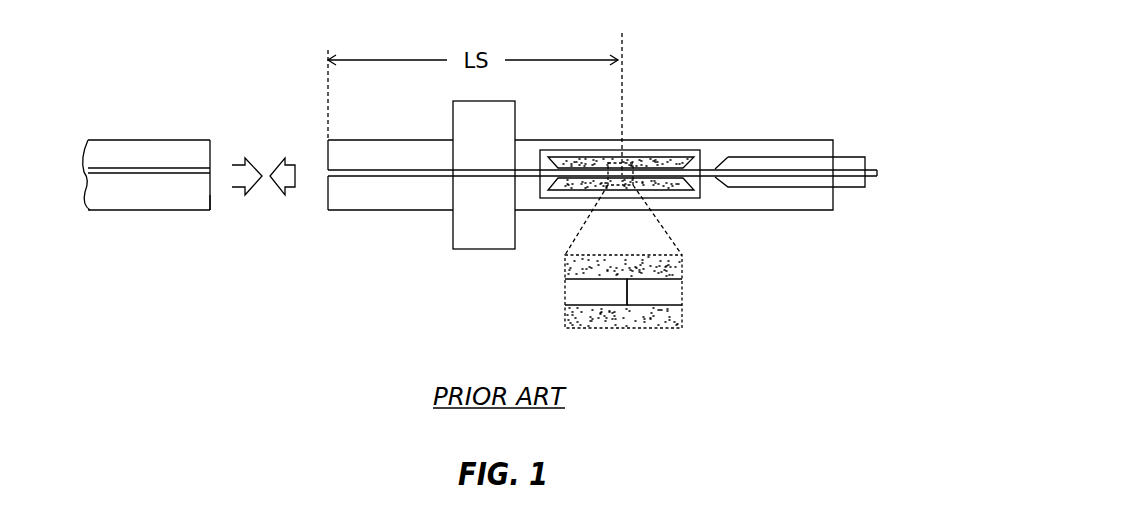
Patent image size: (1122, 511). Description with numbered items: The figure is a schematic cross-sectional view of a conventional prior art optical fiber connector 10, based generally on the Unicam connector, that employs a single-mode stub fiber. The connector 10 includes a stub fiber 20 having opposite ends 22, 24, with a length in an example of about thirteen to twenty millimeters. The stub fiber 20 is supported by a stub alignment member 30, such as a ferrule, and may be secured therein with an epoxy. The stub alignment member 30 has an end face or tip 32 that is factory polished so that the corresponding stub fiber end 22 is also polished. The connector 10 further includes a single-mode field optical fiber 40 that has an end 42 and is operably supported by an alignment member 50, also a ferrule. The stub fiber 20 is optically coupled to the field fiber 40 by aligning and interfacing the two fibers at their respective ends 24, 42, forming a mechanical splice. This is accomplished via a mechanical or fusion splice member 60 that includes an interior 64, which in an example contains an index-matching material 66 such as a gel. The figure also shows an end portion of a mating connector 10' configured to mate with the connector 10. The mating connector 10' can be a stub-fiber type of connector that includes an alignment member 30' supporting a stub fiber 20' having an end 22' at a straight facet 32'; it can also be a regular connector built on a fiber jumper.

The mating connector 10' is at (146, 112).
The alignment member 30' is at (149, 123).
The end 22' is at (165, 137).
The stub fiber 20' is at (123, 210).
The straight facet 32' is at (197, 223).
The optical fiber connector 10 is at (580, 128).
The stub alignment member 30 is at (367, 129).
The end face or tip 32 is at (344, 214).
The stub fiber 20 is at (477, 243).
The end 22 is at (406, 200).
The end 24 is at (628, 285).
The field optical fiber 40 is at (790, 167).
The end 42 is at (627, 300).
The alignment member 50 is at (855, 160).
The splice member 60 is at (553, 150).
The interior 64 is at (583, 157).
The index-matching material 66 is at (640, 165).